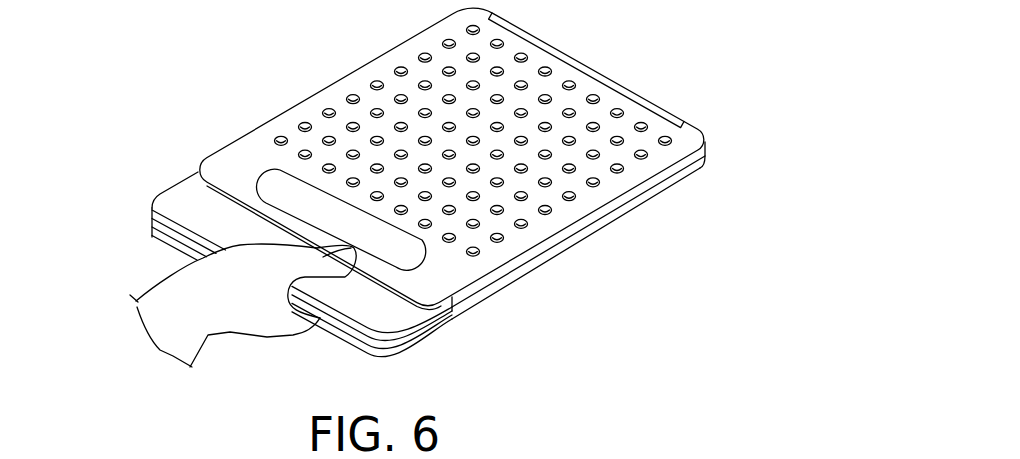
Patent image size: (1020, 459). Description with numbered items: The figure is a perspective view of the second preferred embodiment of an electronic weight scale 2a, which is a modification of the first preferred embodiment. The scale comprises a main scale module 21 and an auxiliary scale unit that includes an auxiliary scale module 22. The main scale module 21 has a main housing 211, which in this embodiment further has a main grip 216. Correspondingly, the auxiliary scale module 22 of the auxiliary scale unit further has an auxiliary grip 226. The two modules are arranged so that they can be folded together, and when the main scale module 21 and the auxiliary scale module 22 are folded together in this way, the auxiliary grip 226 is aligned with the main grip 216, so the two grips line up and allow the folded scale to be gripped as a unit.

The electronic weight scale 2a is at (730, 63).
The main scale module 21 is at (279, 98).
The main housing 211 is at (345, 93).
The main grip 216 is at (162, 190).
The auxiliary scale module 22 is at (606, 247).
The auxiliary grip 226 is at (163, 239).